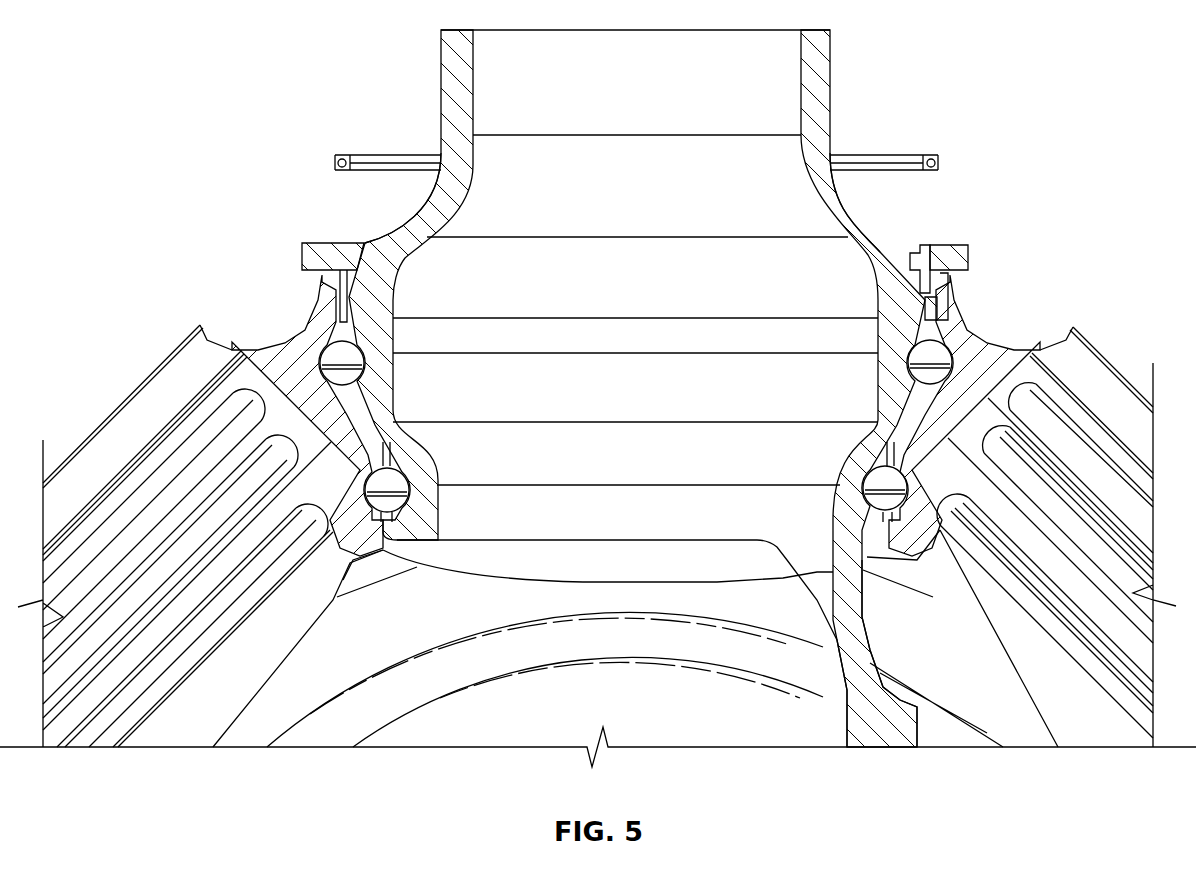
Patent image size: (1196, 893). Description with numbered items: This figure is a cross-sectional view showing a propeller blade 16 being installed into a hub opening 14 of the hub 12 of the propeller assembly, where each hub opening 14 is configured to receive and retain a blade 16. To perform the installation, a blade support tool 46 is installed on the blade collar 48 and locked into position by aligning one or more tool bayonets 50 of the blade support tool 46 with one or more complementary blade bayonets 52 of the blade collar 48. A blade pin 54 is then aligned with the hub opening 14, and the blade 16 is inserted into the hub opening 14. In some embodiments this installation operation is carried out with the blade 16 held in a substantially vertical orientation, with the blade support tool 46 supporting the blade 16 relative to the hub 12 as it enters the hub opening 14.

The hub 12 is at (290, 377).
The hub opening 14 is at (323, 353).
The propeller blade 16 is at (455, 88).
The blade support tool 46 is at (318, 260).
The blade collar 48 is at (887, 257).
The tool bayonet 50 is at (383, 263).
The blade bayonet 52 is at (937, 303).
The blade pin 54 is at (953, 262).